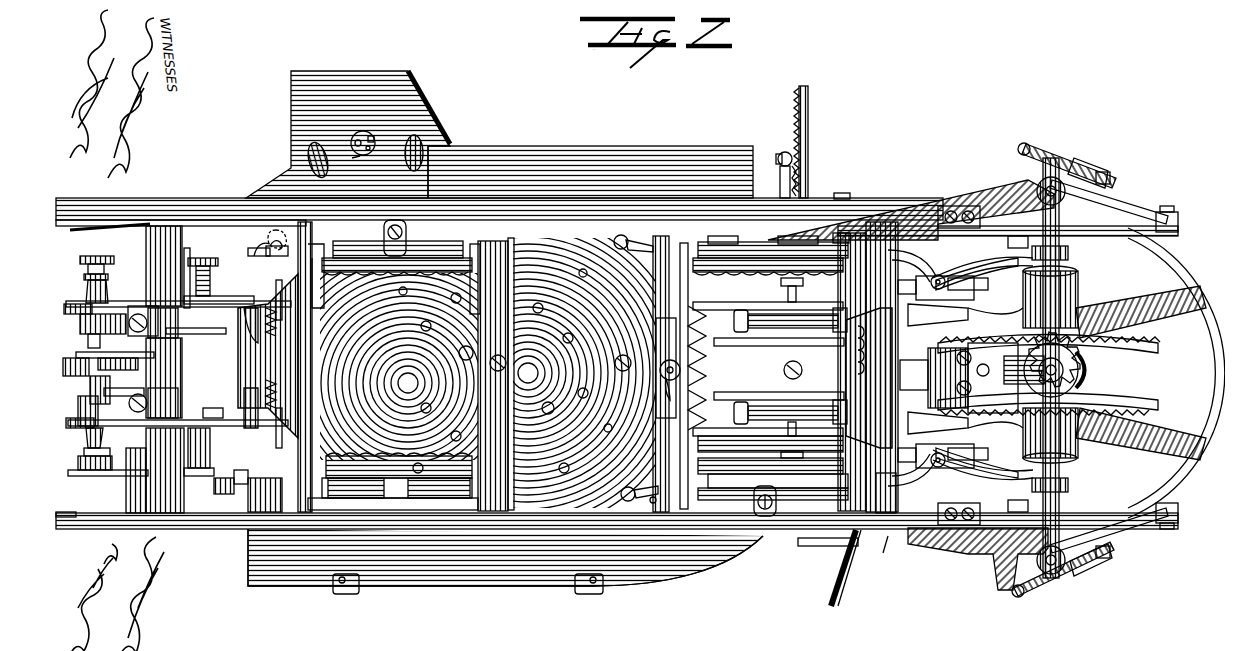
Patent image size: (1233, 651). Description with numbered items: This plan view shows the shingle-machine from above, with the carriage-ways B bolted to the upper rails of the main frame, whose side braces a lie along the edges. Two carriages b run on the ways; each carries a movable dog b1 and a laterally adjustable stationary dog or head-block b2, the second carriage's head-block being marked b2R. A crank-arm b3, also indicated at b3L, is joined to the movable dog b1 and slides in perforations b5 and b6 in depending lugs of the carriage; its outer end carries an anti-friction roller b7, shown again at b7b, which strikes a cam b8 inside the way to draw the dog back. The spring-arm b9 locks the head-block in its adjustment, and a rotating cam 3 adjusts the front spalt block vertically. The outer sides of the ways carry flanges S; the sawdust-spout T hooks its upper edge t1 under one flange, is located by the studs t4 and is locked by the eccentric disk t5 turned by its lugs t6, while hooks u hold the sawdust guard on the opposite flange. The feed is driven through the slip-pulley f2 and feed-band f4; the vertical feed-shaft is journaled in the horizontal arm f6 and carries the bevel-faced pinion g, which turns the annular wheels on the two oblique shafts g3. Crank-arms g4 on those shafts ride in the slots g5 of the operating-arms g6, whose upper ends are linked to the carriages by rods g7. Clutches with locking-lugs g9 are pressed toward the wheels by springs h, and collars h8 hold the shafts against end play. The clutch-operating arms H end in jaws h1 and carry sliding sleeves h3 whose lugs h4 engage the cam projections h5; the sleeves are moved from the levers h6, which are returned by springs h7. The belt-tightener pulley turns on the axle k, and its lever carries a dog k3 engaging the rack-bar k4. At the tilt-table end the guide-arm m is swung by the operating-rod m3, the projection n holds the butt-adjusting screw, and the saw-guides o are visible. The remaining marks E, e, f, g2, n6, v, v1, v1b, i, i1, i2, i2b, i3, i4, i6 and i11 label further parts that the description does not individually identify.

The carriage-ways B is at (205, 197).
The sawdust-spout T is at (358, 63).
The flange S is at (590, 172).
The upper edge of spout t1 is at (305, 165).
The lugs t6 is at (366, 130).
The disk t5 is at (353, 168).
The studs or pins t4 is at (398, 152).
The rack-bar k4 is at (801, 100).
The dog k3 is at (801, 151).
The vertical axle k is at (780, 182).
The cam b8 is at (100, 221).
The head i1 is at (90, 266).
The pinion i3 is at (80, 280).
The rod i is at (120, 300).
The collar i11 is at (71, 307).
The gear i2 is at (74, 312).
The plate v is at (148, 349).
The sleeve i6 is at (85, 389).
The guide-arm m is at (72, 386).
The rod i4 is at (74, 420).
The gear i2b is at (87, 449).
The lower plate v1 is at (108, 481).
The operating-rod m3 is at (155, 470).
The saw-guides o is at (240, 238).
The anti-friction roller b7 is at (278, 227).
The crank-arm b3L is at (268, 356).
The perforation b6 is at (287, 363).
The operating-levers h6 is at (232, 468).
The projection n is at (71, 499).
The carriage b is at (403, 367).
The stationary dog b2 is at (350, 250).
The spring-arm b9 is at (580, 368).
The movable dog b1 is at (584, 368).
The drum E is at (528, 373).
The eccentric e is at (618, 242).
The rotating cam 3 is at (668, 368).
The stationary dog b2R is at (775, 371).
The crank-arm b3 is at (866, 340).
The perforation b5 is at (892, 483).
The anti-friction roller b7b is at (879, 551).
The lower housing v1b is at (505, 557).
The hooks u is at (338, 586).
The strut n6 is at (829, 568).
The rods g7 is at (868, 214).
The crank-arms g4 is at (1045, 170).
The slots g5 is at (1099, 361).
The operating-arms g6 is at (1120, 205).
The side braces a is at (1210, 360).
The adjustable collars h8 is at (1062, 246).
The locking-lug g9 is at (1070, 285).
The oblique shafts g3 is at (1055, 256).
The springs h is at (983, 368).
The cam projections h5 is at (930, 264).
The clutch-operating arms H is at (936, 378).
The sleeves h3 is at (965, 369).
The lugs h4 is at (947, 370).
The springs h7 is at (995, 372).
The rack g2 is at (1122, 340).
The bevel-faced pinion g is at (1080, 362).
The horizontal arm f6 is at (1044, 370).
The carriage f is at (972, 373).
The slip-pulley f2 is at (973, 370).
The feed-band f4 is at (1198, 438).
The jaws h1 is at (1068, 455).